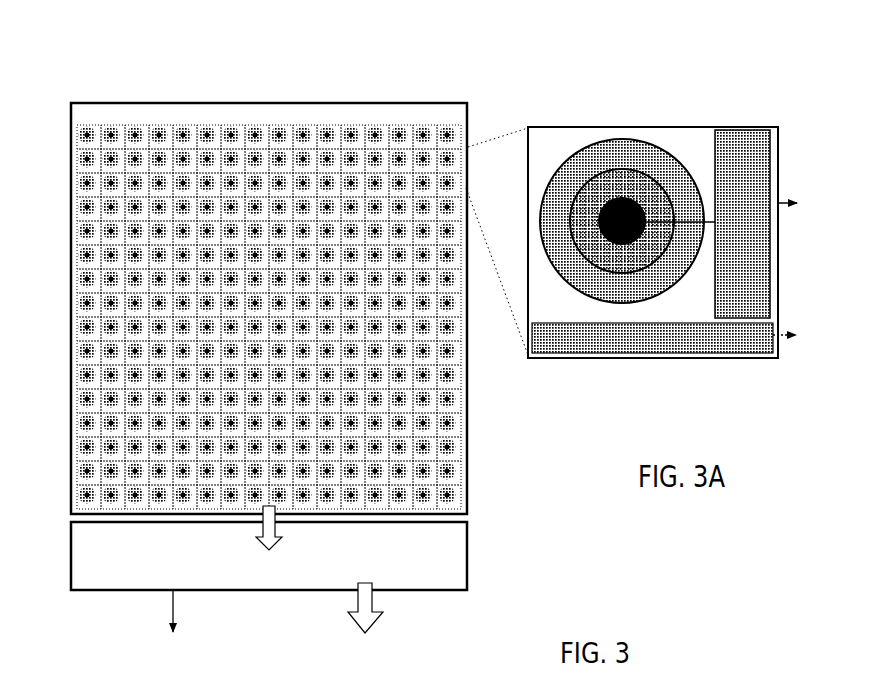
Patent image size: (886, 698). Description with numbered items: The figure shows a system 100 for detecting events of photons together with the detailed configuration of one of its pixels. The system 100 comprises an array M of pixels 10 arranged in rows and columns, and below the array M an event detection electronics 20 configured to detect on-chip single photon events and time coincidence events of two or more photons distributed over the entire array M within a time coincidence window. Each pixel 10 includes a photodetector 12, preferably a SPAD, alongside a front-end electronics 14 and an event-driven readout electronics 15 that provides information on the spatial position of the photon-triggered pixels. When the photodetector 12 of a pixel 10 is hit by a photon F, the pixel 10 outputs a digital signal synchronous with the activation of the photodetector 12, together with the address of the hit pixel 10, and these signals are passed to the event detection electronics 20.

In FIG. 3, the system for detecting events of photons 100 is at (314, 339).
In FIG. 3, the array M is at (301, 277).
In FIG. 3, the pixel 10 is at (462, 472).
In FIG. 3A, the pixel 10 is at (680, 235).
In FIG. 3, the event detection electronics 20 is at (468, 561).
In FIG. 3A, the photodetector 12 is at (605, 152).
In FIG. 3A, the front-end electronics 14 is at (752, 152).
In FIG. 3A, the event-driven readout electronics 15 is at (638, 342).
In FIG. 3A, the photon F is at (631, 209).